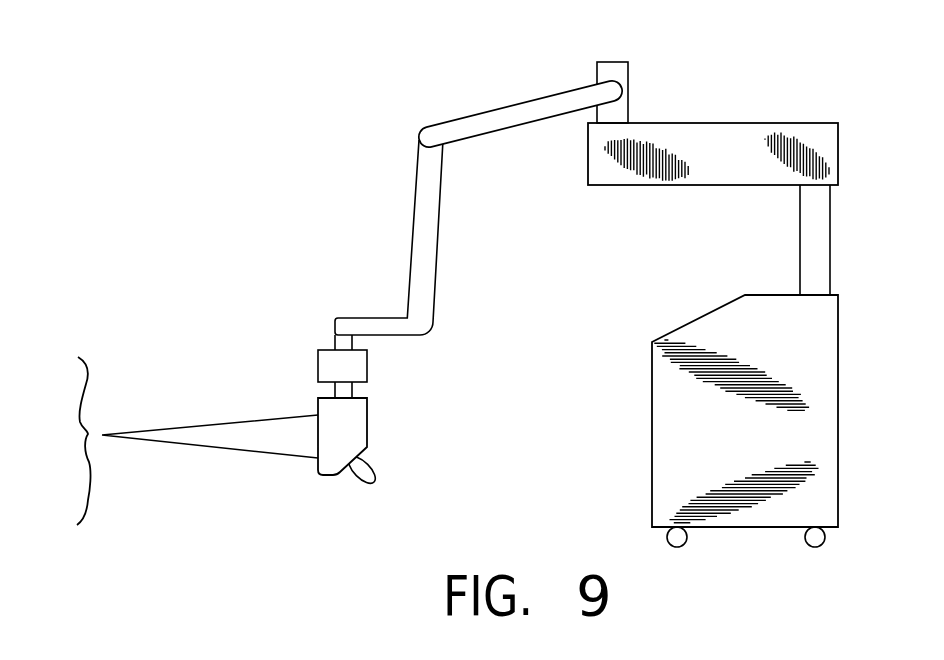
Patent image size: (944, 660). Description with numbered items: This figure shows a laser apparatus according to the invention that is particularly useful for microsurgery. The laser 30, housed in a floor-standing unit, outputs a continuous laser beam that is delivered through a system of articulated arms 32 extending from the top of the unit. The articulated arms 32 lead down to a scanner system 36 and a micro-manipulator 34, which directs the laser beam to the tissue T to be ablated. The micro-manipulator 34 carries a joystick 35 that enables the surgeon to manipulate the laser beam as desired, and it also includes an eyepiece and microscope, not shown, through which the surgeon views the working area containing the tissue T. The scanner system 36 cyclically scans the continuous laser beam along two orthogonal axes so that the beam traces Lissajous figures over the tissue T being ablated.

The laser 30 is at (839, 398).
The articulated arms 32 is at (512, 105).
The micro-manipulator 34 is at (318, 481).
The joystick 35 is at (376, 483).
The scanner system 36 is at (368, 370).
The tissue T is at (67, 407).